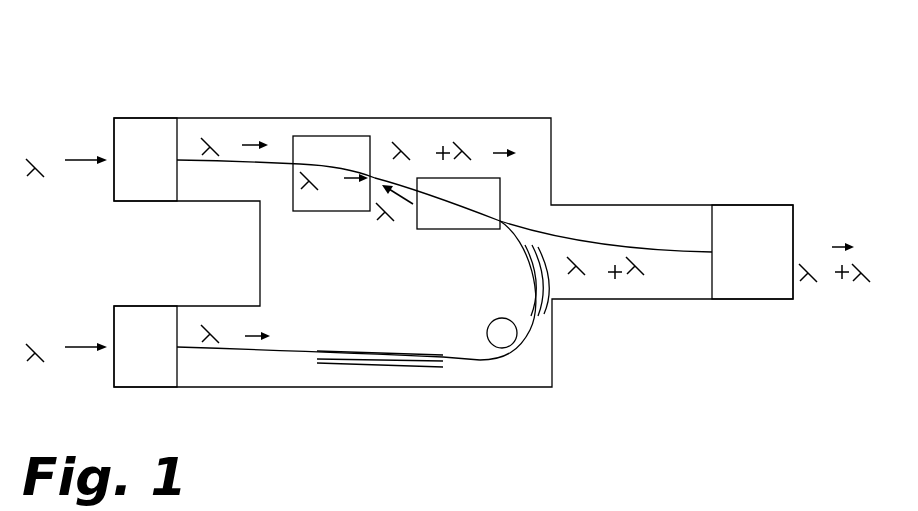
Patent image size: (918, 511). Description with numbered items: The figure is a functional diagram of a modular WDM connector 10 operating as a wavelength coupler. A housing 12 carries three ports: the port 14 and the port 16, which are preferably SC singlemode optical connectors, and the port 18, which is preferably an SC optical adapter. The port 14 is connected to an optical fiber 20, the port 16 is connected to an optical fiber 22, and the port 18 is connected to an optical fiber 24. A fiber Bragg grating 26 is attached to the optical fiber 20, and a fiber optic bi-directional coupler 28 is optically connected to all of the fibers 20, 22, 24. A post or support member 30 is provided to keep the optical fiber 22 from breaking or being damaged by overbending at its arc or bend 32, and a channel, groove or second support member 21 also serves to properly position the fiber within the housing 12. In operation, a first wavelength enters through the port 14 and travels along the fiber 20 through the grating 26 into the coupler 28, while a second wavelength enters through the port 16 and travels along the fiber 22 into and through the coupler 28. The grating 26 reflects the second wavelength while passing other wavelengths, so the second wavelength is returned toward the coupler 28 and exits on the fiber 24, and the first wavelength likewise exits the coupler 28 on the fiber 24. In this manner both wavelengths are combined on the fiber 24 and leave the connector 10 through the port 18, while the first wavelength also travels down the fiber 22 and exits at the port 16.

The modular WDM connector 10 is at (339, 57).
The housing 12 is at (458, 118).
The port 14 is at (142, 130).
The port 16 is at (131, 320).
The port 18 is at (748, 210).
The optical fiber 20 is at (223, 162).
The second support member 21 is at (528, 274).
The optical fiber 22 is at (285, 355).
The optical fiber 24 is at (697, 253).
The fiber Bragg grating 26 is at (333, 135).
The fiber optic bi-directional coupler 28 is at (417, 228).
The support member 30 is at (500, 335).
The bend 32 is at (533, 328).